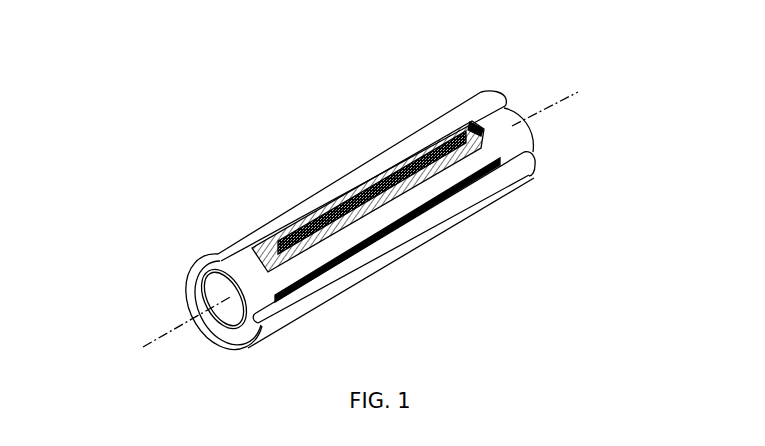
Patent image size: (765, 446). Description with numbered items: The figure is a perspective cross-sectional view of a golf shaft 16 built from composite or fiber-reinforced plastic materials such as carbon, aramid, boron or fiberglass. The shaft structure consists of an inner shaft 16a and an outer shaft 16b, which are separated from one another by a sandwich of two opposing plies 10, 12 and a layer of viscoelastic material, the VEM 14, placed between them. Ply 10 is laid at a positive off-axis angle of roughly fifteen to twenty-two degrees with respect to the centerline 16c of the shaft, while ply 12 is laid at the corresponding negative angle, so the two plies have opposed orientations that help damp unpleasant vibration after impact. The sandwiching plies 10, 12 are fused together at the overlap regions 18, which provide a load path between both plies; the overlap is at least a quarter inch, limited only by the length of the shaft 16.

The ply 10 is at (441, 196).
The ply 12 is at (533, 170).
The VEM 14 is at (416, 176).
The golf shaft 16 is at (163, 243).
The inner shaft 16a is at (535, 156).
The outer shaft 16b is at (481, 93).
The centerline 16c is at (167, 333).
The overlap regions 18 is at (476, 125).